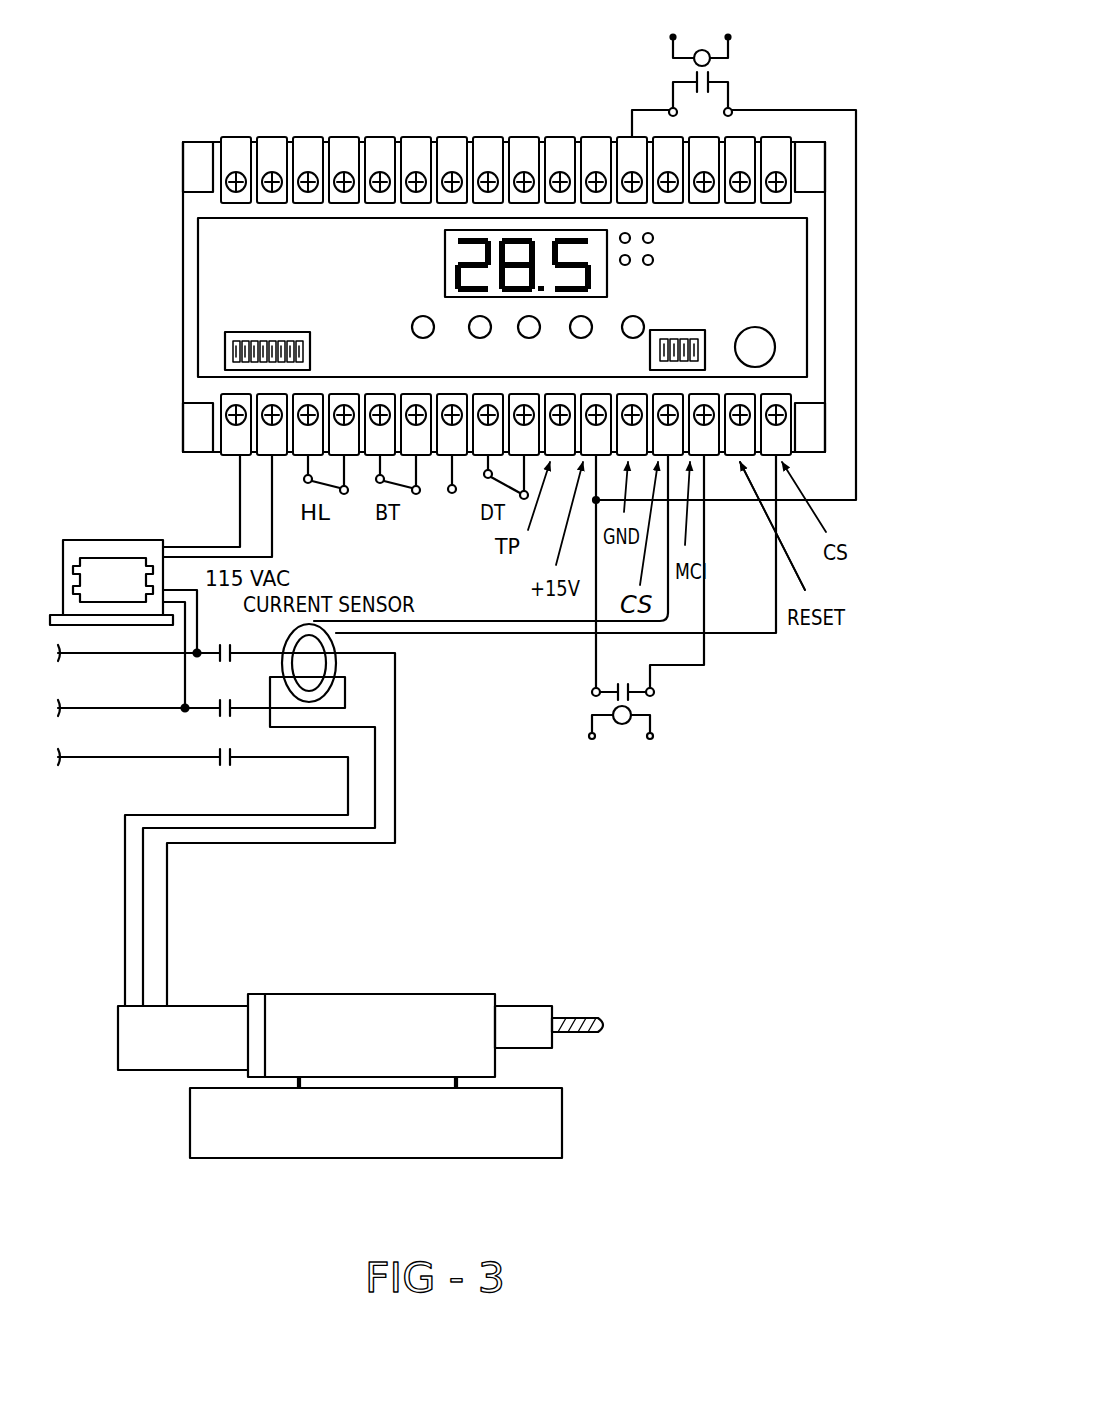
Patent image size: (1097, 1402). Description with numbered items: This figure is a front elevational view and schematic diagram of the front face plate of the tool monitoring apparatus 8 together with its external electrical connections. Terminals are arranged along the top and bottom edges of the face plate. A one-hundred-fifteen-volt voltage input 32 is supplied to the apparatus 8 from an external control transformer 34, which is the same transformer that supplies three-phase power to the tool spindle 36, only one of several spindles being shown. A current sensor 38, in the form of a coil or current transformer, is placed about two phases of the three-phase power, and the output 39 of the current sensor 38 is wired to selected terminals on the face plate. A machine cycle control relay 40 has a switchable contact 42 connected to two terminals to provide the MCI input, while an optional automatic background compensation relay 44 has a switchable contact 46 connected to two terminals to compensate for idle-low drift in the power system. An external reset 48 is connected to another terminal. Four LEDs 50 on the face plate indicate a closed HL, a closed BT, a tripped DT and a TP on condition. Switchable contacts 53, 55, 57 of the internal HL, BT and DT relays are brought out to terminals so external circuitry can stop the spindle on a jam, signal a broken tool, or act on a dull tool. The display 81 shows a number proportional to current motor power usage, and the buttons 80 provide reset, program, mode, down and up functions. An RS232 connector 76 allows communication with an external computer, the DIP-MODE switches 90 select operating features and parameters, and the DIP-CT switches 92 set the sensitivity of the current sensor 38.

The tool monitoring apparatus 8 is at (210, 128).
The 115 V voltage input 32 is at (186, 556).
The 115VAC control transformer 34 is at (137, 507).
The tool spindle 36 is at (365, 995).
The current sensor 38 is at (336, 668).
The output of the current sensor 39 is at (495, 626).
The machine cycle control relay 40 is at (628, 722).
The switchable contact 42 is at (635, 698).
The automatic background compensation relay 44 is at (670, 44).
The switchable contact 46 is at (718, 72).
The external reset 48 is at (808, 628).
The LEDs 50 is at (626, 232).
The switchable contact 53 is at (342, 492).
The switchable contact 55 is at (412, 492).
The switchable contact 57 is at (496, 487).
The RS232 connector 76 is at (776, 353).
The input switches or buttons 80 is at (420, 316).
The display 81 is at (443, 250).
The DIP-MODE dip switches 90 is at (228, 336).
The DIP-CT switches 92 is at (706, 334).